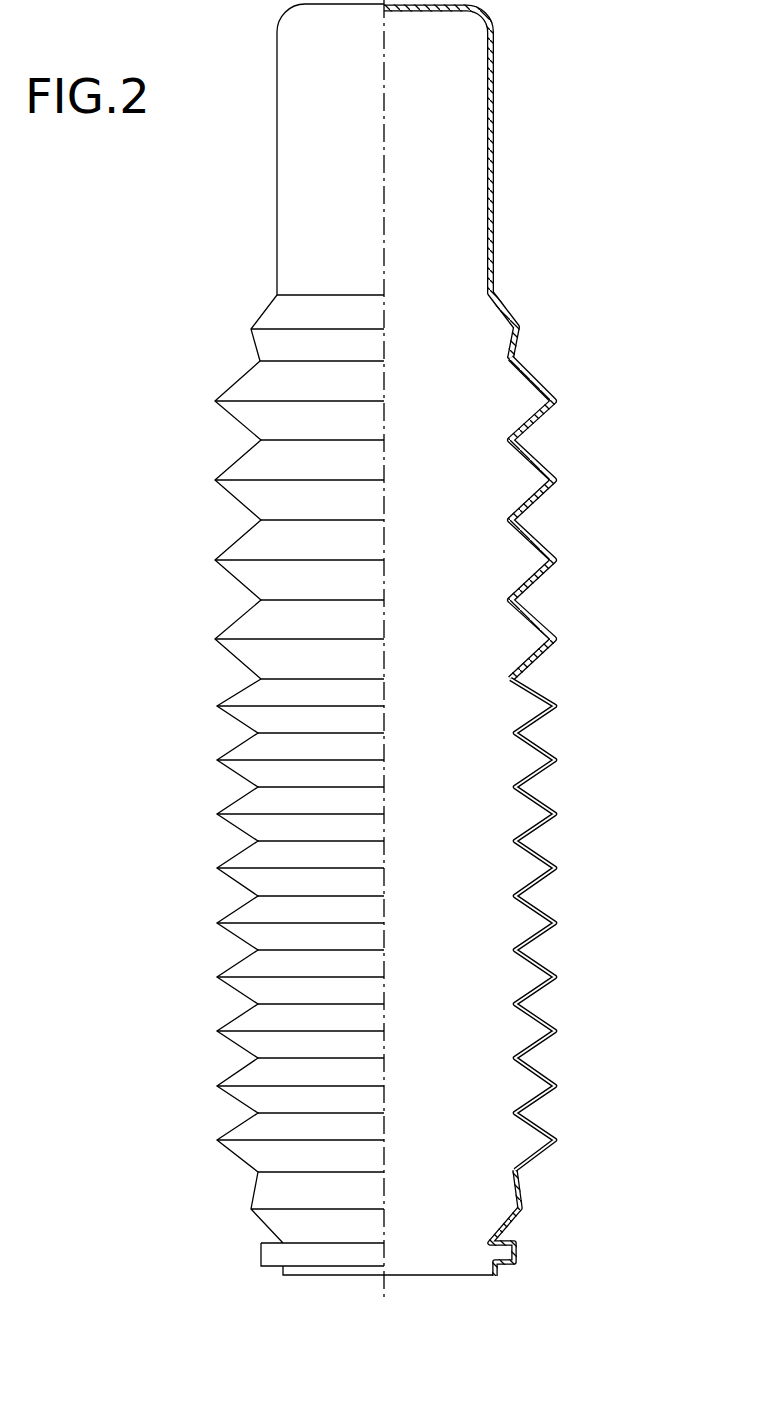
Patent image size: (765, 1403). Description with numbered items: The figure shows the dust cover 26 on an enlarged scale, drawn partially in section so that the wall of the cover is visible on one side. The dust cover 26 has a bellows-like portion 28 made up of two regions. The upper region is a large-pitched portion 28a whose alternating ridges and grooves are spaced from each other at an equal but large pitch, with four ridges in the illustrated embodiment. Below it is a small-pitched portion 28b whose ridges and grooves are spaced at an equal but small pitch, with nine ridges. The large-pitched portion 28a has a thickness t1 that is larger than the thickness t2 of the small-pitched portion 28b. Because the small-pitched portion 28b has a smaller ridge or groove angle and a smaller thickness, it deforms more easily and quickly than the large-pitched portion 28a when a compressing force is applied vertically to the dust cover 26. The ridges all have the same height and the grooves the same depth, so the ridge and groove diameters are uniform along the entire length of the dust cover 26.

The dust cover 26 is at (376, 645).
The bellows-like portion 28 is at (376, 765).
The large-pitched portion 28a is at (425, 518).
The small-pitched portion 28b is at (427, 924).
The thickness of the large-pitched portion t1 is at (516, 518).
The thickness of the small-pitched portion t2 is at (519, 924).